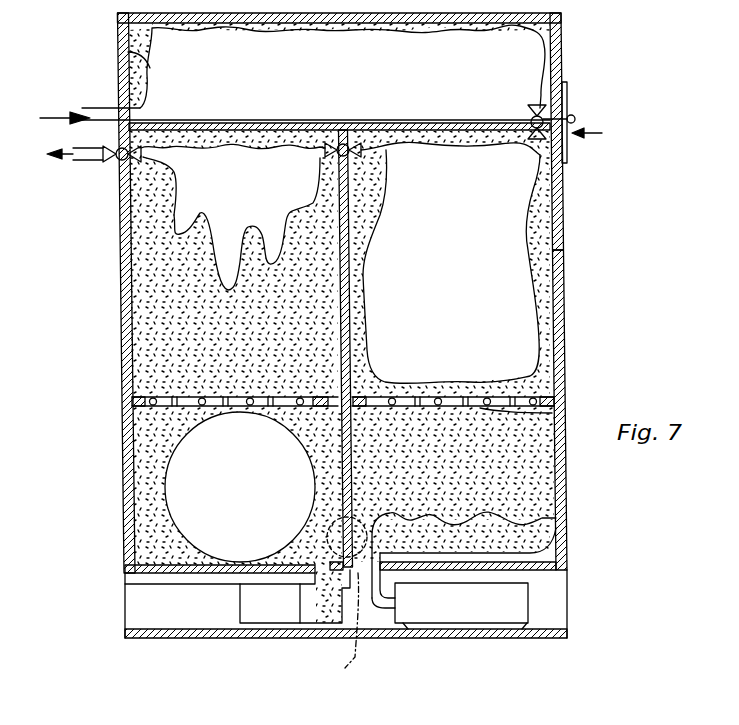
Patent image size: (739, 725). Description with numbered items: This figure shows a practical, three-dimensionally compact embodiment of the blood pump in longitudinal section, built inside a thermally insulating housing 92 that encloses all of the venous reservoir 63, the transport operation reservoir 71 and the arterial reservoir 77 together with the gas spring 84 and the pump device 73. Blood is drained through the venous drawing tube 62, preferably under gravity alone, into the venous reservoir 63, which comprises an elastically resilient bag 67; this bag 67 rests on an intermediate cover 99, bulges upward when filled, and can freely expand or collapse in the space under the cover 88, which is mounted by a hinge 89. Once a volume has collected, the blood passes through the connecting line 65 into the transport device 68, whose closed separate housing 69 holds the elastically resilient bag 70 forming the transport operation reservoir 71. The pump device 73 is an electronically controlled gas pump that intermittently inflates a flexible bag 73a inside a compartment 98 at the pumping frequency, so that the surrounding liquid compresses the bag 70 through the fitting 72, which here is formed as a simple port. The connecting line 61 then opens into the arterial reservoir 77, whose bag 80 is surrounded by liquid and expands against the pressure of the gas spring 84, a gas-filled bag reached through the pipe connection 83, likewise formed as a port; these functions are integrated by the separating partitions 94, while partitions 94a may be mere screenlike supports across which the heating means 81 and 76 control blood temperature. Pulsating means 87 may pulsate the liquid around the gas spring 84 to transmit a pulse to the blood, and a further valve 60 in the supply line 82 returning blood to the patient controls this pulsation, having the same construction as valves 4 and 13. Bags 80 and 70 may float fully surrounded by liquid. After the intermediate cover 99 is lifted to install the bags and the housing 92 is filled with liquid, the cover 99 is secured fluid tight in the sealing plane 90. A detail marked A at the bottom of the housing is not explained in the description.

The valve 4 is at (545, 163).
The valve 13 is at (362, 148).
The further valve 60 is at (113, 168).
The connecting line 61 is at (322, 151).
The venous drawing tube 62 is at (95, 108).
The venous reservoir 63 is at (385, 84).
The connecting line 65 is at (565, 106).
The elastically resilient bag 67 is at (127, 53).
The transport device 68 is at (553, 293).
The housing 69 is at (567, 358).
The elastically resilient bag 70 is at (363, 276).
The transport operation reservoir 71 is at (462, 305).
The fitting 72 is at (356, 405).
The pump device 73 is at (518, 597).
The flexible bag 73a is at (553, 532).
The heating means 76 is at (487, 407).
The arterial reservoir 77 is at (252, 200).
The bag 80 is at (174, 171).
The heating means 81 is at (202, 397).
The supply line 82 is at (80, 162).
The pipe connection 83 is at (327, 397).
The gas spring 84 is at (244, 489).
The pulsating means 87 is at (250, 602).
The cover 88 is at (561, 32).
The hinge 89 is at (576, 118).
The sealing plane 90 is at (602, 137).
The thermally insulating housing 92 is at (104, 295).
The separating partitions 94 is at (340, 335).
The partitions 94a is at (275, 397).
The compartment 98 is at (460, 477).
The intermediate cover 99 is at (272, 123).
The section line A is at (344, 635).